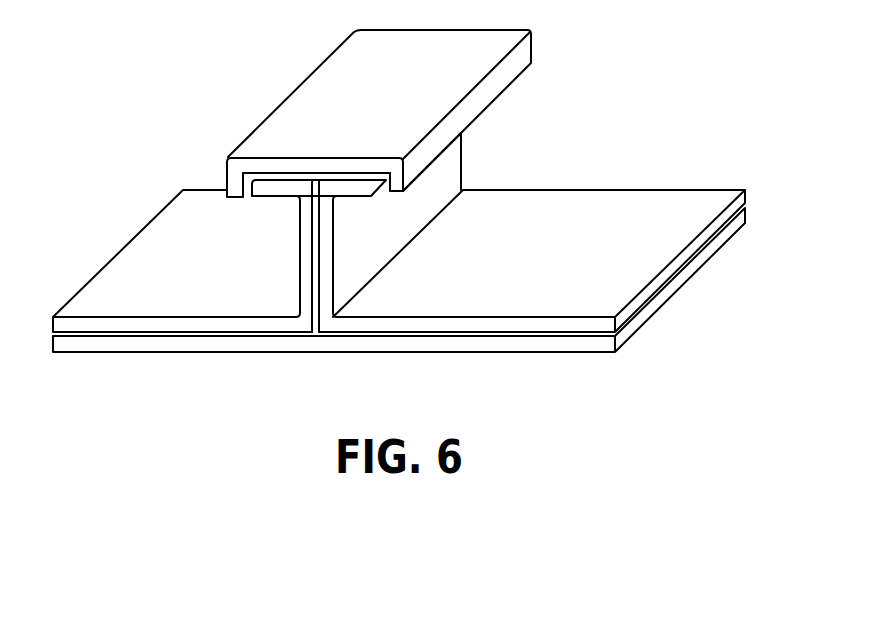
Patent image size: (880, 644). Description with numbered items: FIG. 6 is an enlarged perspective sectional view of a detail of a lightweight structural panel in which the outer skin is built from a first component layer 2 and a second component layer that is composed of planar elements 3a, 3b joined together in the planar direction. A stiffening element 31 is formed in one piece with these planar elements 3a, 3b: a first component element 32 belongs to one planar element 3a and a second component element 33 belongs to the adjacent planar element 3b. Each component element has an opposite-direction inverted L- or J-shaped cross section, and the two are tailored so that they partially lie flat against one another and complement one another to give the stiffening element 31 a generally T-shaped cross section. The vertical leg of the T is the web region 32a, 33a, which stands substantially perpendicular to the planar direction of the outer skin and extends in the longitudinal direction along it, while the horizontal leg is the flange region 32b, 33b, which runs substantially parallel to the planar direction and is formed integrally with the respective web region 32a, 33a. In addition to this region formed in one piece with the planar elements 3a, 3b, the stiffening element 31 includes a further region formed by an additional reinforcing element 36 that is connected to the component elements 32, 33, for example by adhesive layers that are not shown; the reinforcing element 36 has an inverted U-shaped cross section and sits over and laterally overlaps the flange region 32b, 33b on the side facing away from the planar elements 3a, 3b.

The first component layer 2 is at (532, 345).
The planar element 3a is at (700, 207).
The planar element 3b is at (183, 211).
The stiffening element 31 is at (594, 45).
The first component element 32 is at (465, 185).
The web region 32a is at (442, 172).
The flange region 32b is at (357, 190).
The second component element 33 is at (213, 208).
The web region 33a is at (302, 275).
The flange region 33b is at (292, 193).
The additional reinforcing element 36 is at (385, 80).